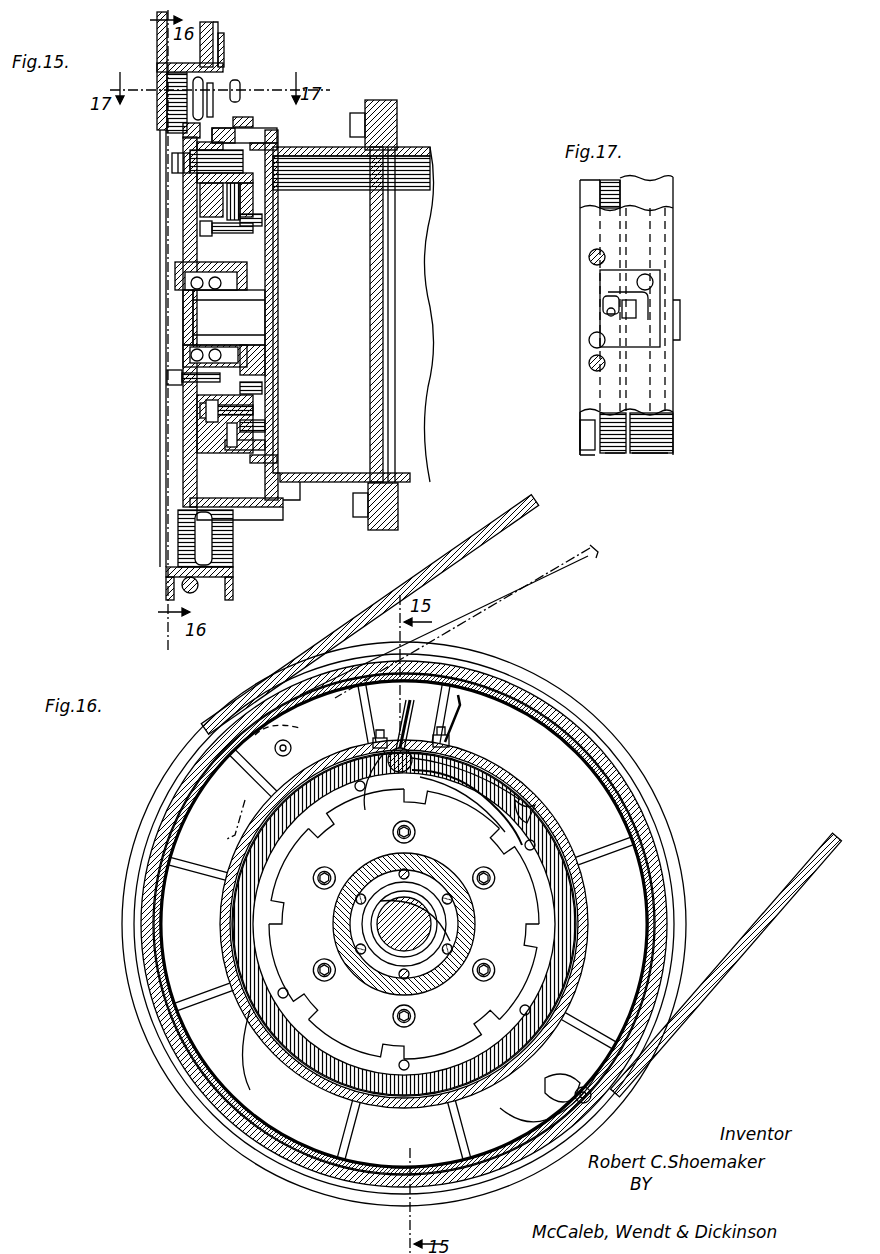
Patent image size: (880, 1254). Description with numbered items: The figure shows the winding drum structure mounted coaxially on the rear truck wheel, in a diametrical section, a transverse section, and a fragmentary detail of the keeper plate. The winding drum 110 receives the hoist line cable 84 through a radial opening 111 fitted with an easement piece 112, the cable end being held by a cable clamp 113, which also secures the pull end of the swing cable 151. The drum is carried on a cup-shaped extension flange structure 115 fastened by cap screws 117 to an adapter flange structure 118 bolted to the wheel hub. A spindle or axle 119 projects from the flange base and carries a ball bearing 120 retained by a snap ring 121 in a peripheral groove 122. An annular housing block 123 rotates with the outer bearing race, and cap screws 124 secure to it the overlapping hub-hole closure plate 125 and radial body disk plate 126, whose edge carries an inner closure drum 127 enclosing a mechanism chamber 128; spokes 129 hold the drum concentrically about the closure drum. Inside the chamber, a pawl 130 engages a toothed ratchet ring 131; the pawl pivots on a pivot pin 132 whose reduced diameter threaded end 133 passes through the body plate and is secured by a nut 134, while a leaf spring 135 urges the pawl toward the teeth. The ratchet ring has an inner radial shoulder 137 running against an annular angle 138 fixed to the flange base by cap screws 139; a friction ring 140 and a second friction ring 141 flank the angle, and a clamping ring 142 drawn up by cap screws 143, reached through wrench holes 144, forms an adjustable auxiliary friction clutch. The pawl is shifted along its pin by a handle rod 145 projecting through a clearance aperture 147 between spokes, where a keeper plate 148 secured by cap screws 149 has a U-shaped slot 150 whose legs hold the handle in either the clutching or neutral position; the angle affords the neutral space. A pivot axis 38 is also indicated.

In FIG. 16, the pivot axis 38 is at (250, 836).
In FIG. 15, the hoist line cable 84 is at (225, 40).
In FIG. 16, the hoist line cable 84 is at (533, 520).
In FIG. 15, the winding drum 110 is at (222, 66).
In FIG. 17, the winding drum 110 is at (684, 225).
In FIG. 16, the winding drum 110 is at (640, 812).
In FIG. 16, the radial opening 111 is at (600, 1128).
In FIG. 16, the easement piece 112 is at (540, 1140).
In FIG. 16, the cable clamp 113 is at (262, 742).
In FIG. 15, the extension flange structure 115 is at (326, 484).
In FIG. 15, the cap screws 117 is at (380, 100).
In FIG. 15, the adapter flange structure 118 is at (432, 446).
In FIG. 15, the spindle or axle 119 is at (255, 305).
In FIG. 16, the spindle or axle 119 is at (440, 918).
In FIG. 15, the ball bearing 120 is at (185, 282).
In FIG. 16, the ball bearing 120 is at (445, 965).
In FIG. 15, the snap ring 121 is at (185, 300).
In FIG. 15, the peripheral groove 122 is at (183, 318).
In FIG. 15, the annular housing block 123 is at (266, 352).
In FIG. 15, the cap screws 124 is at (167, 377).
In FIG. 15, the hub-hole closure plate 125 is at (184, 244).
In FIG. 15, the radial body disk plate 126 is at (188, 458).
In FIG. 17, the radial body disk plate 126 is at (580, 435).
In FIG. 15, the inner closure drum 127 is at (262, 510).
In FIG. 16, the inner closure drum 127 is at (233, 920).
In FIG. 15, the mechanism chamber 128 is at (280, 264).
In FIG. 16, the mechanism chamber 128 is at (270, 1028).
In FIG. 15, the spokes 129 is at (200, 540).
In FIG. 17, the spokes 129 is at (590, 256).
In FIG. 16, the spokes 129 is at (255, 780).
In FIG. 15, the pawl 130 is at (197, 178).
In FIG. 16, the pawl 130 is at (505, 782).
In FIG. 15, the ratchet ring 131 is at (200, 200).
In FIG. 17, the ratchet ring 131 is at (615, 455).
In FIG. 16, the ratchet ring 131 is at (470, 770).
In FIG. 15, the pivot pin 132 is at (278, 132).
In FIG. 17, the pivot pin 132 is at (636, 308).
In FIG. 16, the pivot pin 132 is at (395, 770).
In FIG. 15, the reduced diameter threaded end 133 is at (196, 146).
In FIG. 16, the reduced diameter threaded end 133 is at (370, 975).
In FIG. 15, the nut 134 is at (172, 162).
In FIG. 16, the leaf spring 135 is at (535, 805).
In FIG. 15, the inner radial shoulder 137 is at (232, 448).
In FIG. 15, the annular angle 138 is at (262, 444).
In FIG. 17, the annular angle 138 is at (652, 455).
In FIG. 16, the annular angle 138 is at (550, 830).
In FIG. 15, the cap screws 139 is at (280, 144).
In FIG. 16, the cap screws 139 is at (228, 880).
In FIG. 15, the friction ring 140 is at (197, 436).
In FIG. 15, the friction ring 141 is at (266, 426).
In FIG. 15, the clamping ring 142 is at (254, 208).
In FIG. 15, the cap screws 143 is at (262, 222).
In FIG. 16, the cap screws 143 is at (416, 832).
In FIG. 15, the wrench holes 144 is at (200, 228).
In FIG. 15, the handle rod 145 is at (203, 85).
In FIG. 17, the handle rod 145 is at (603, 312).
In FIG. 16, the handle rod 145 is at (462, 695).
In FIG. 15, the clearance aperture 147 is at (216, 112).
In FIG. 17, the clearance aperture 147 is at (682, 332).
In FIG. 16, the clearance aperture 147 is at (355, 812).
In FIG. 17, the keeper plate 148 is at (600, 300).
In FIG. 16, the keeper plate 148 is at (380, 728).
In FIG. 17, the cap screws 149 is at (652, 278).
In FIG. 16, the cap screws 149 is at (450, 742).
In FIG. 15, the U-shaped slot 150 is at (242, 84).
In FIG. 17, the U-shaped slot 150 is at (606, 292).
In FIG. 16, the U-shaped slot 150 is at (424, 690).
In FIG. 15, the swing cable 151 is at (196, 590).
In FIG. 16, the swing cable 151 is at (566, 568).